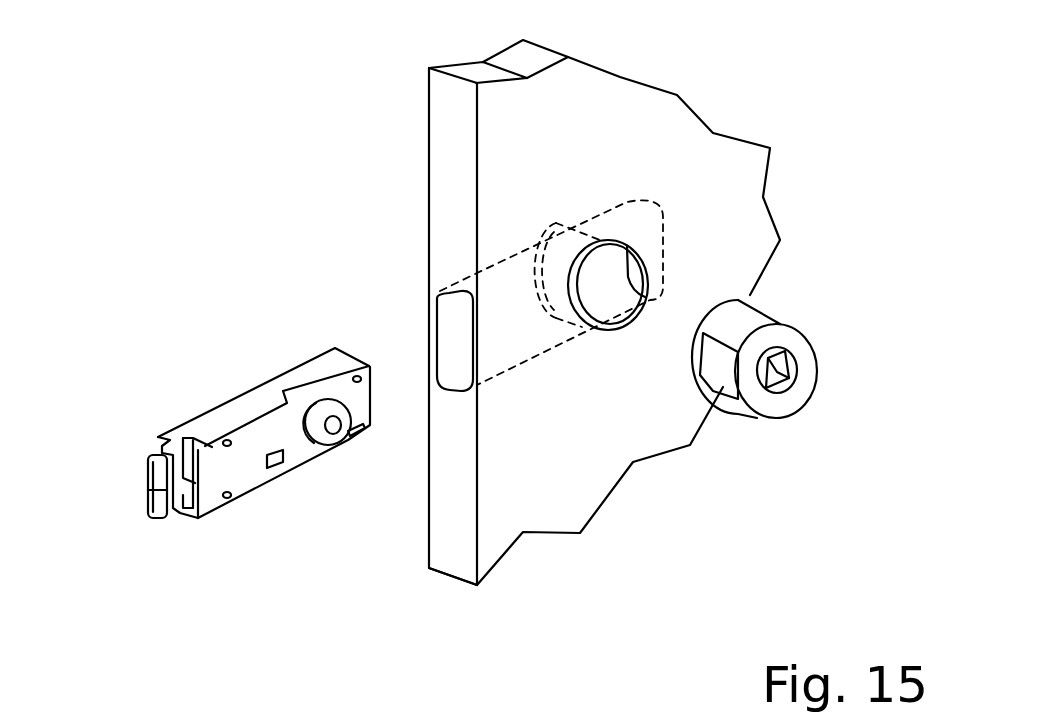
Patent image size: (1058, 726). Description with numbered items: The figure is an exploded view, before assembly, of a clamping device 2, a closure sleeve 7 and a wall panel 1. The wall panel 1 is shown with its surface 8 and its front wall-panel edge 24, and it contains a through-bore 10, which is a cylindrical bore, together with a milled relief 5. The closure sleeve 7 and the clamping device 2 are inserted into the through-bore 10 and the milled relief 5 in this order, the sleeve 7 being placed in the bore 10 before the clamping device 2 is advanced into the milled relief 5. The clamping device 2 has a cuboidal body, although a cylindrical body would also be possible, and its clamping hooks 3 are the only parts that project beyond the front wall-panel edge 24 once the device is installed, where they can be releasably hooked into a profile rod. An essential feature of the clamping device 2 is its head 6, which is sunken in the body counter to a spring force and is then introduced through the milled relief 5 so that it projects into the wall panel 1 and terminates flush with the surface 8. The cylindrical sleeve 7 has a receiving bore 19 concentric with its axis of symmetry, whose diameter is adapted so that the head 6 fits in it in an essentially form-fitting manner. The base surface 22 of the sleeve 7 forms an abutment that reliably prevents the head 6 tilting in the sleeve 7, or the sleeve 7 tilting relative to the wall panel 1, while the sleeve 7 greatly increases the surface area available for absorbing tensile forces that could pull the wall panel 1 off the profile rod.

The wall panel 1 is at (448, 111).
The clamping device 2 is at (250, 472).
The clamping hooks 3 is at (155, 475).
The milled relief 5 is at (457, 317).
The head 6 is at (322, 420).
The sleeve 7 is at (806, 357).
The surface 8 is at (752, 163).
The through-bore 10 is at (590, 278).
The receiving bore 19 is at (777, 386).
The base surface 22 is at (716, 371).
The front wall-panel edge 24 is at (440, 540).